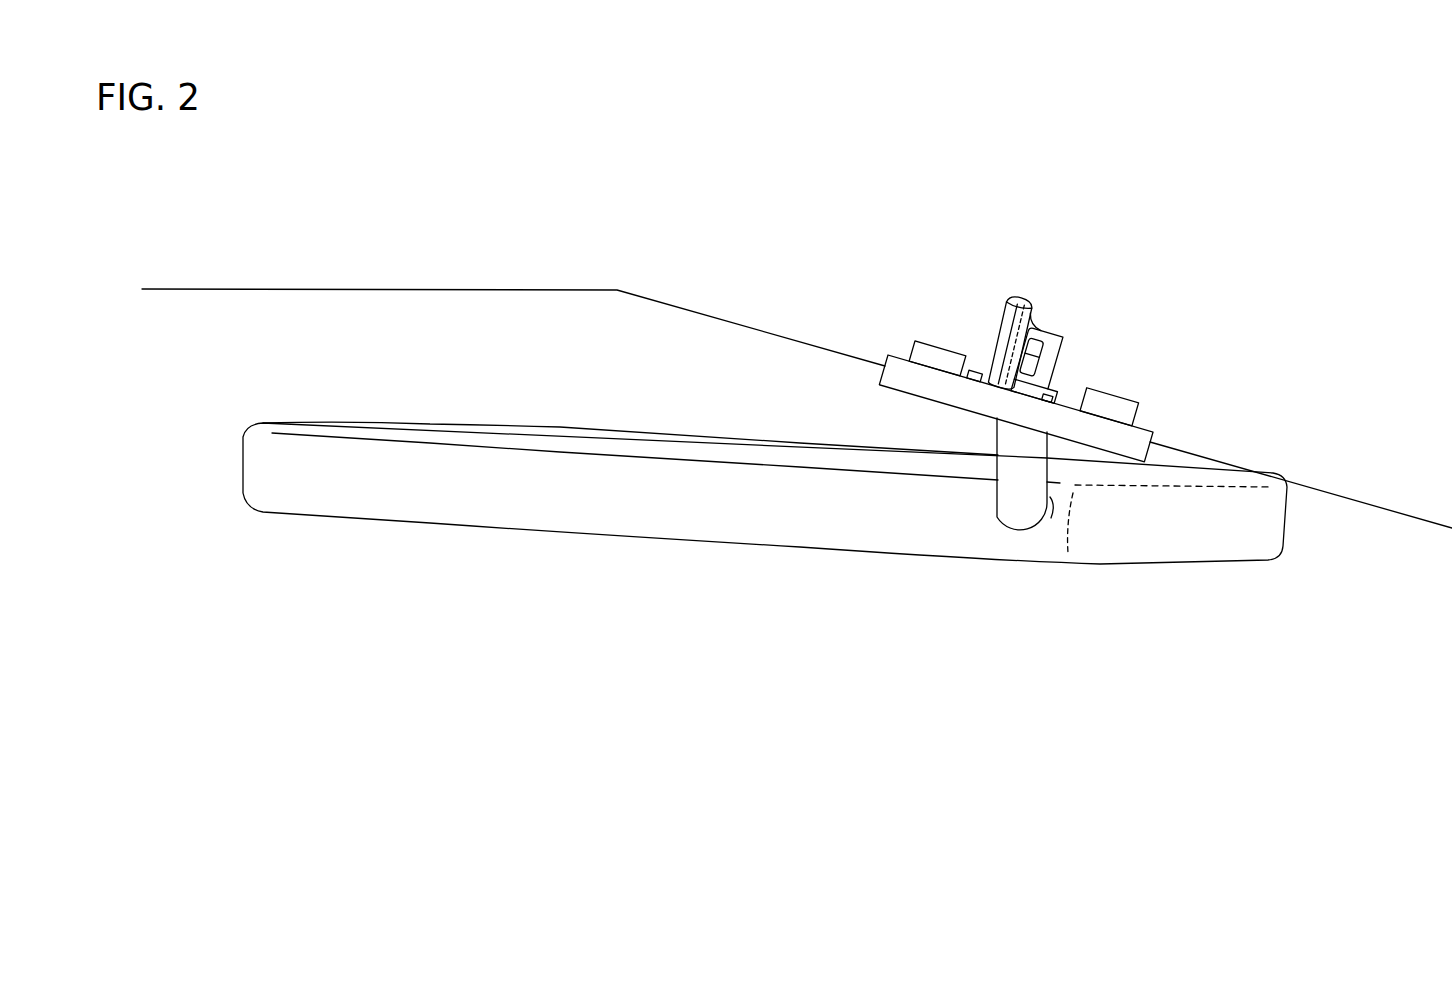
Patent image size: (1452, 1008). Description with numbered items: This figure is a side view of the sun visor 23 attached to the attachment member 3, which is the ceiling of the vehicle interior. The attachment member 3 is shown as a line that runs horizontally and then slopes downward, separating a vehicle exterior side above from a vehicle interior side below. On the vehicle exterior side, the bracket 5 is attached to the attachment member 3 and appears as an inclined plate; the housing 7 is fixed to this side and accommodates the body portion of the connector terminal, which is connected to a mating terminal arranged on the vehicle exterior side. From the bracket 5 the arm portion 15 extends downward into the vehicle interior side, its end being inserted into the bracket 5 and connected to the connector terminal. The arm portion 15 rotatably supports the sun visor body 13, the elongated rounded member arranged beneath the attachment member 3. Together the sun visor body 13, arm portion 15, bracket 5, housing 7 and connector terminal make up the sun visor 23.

The attachment member 3 is at (545, 289).
The bracket 5 is at (898, 348).
The housing 7 is at (1022, 296).
The sun visor body 13 is at (648, 540).
The arm portion 15 is at (993, 512).
The sun visor 23 is at (777, 640).